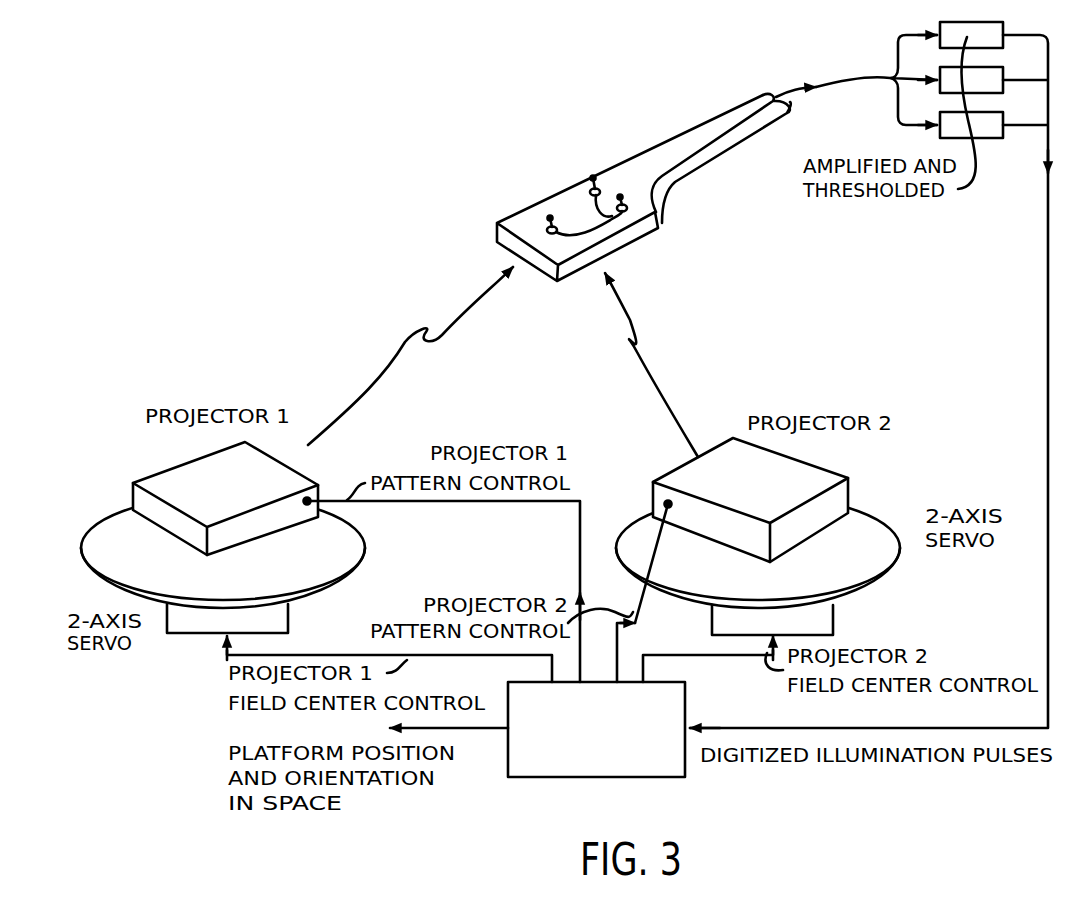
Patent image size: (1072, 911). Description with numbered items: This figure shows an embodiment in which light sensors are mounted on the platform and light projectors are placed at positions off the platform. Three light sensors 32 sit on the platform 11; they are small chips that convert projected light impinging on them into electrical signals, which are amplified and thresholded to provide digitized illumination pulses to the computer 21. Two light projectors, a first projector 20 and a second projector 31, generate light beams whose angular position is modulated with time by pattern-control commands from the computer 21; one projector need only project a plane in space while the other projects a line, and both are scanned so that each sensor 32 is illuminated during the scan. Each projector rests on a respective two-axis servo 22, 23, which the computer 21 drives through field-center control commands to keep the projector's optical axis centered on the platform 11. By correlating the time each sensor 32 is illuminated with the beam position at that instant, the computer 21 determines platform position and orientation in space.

The platform 11 is at (497, 242).
The code generator 20 is at (180, 475).
The computer 21 is at (533, 770).
The 2-axis pointing servo 22 is at (127, 580).
The 2-axis pointing servo 23 is at (883, 525).
The light projector 31 is at (778, 468).
The light sensor 32 is at (620, 195).